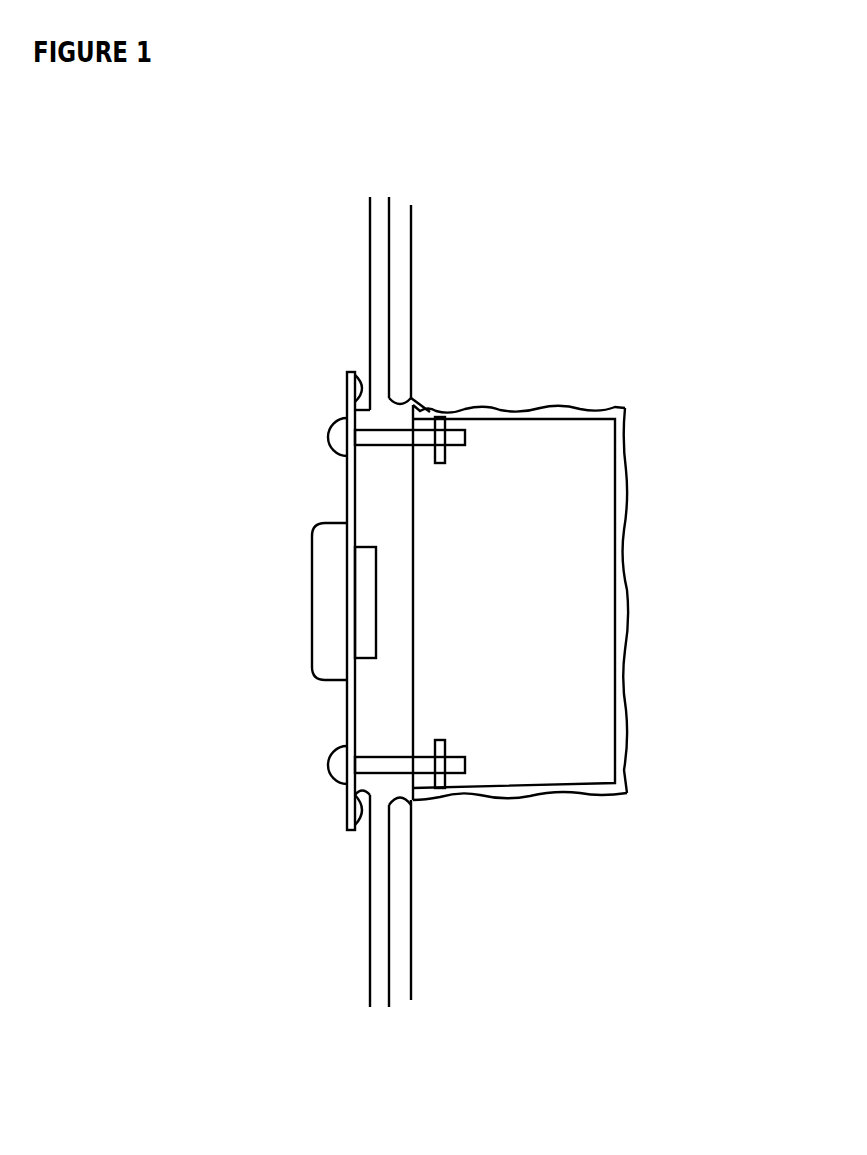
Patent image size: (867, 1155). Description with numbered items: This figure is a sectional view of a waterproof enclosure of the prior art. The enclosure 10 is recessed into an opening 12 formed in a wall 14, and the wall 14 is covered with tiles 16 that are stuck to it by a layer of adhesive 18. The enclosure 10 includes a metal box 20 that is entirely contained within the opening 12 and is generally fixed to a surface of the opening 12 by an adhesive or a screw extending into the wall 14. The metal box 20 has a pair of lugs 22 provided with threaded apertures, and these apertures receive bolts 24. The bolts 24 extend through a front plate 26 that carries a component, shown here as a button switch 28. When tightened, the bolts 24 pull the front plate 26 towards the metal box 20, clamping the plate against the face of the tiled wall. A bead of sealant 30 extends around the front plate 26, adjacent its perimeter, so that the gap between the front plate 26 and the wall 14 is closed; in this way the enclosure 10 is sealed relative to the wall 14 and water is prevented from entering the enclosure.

The enclosure 10 is at (262, 679).
The opening 12 is at (617, 580).
The wall 14 is at (450, 945).
The tiles 16 is at (380, 263).
The layer of adhesive 18 is at (403, 330).
The metal box 20 is at (583, 634).
The lugs 22 is at (362, 438).
The bolts 24 is at (403, 440).
The front plate 26 is at (362, 808).
The button switch 28 is at (320, 587).
The bead of sealant 30 is at (360, 392).